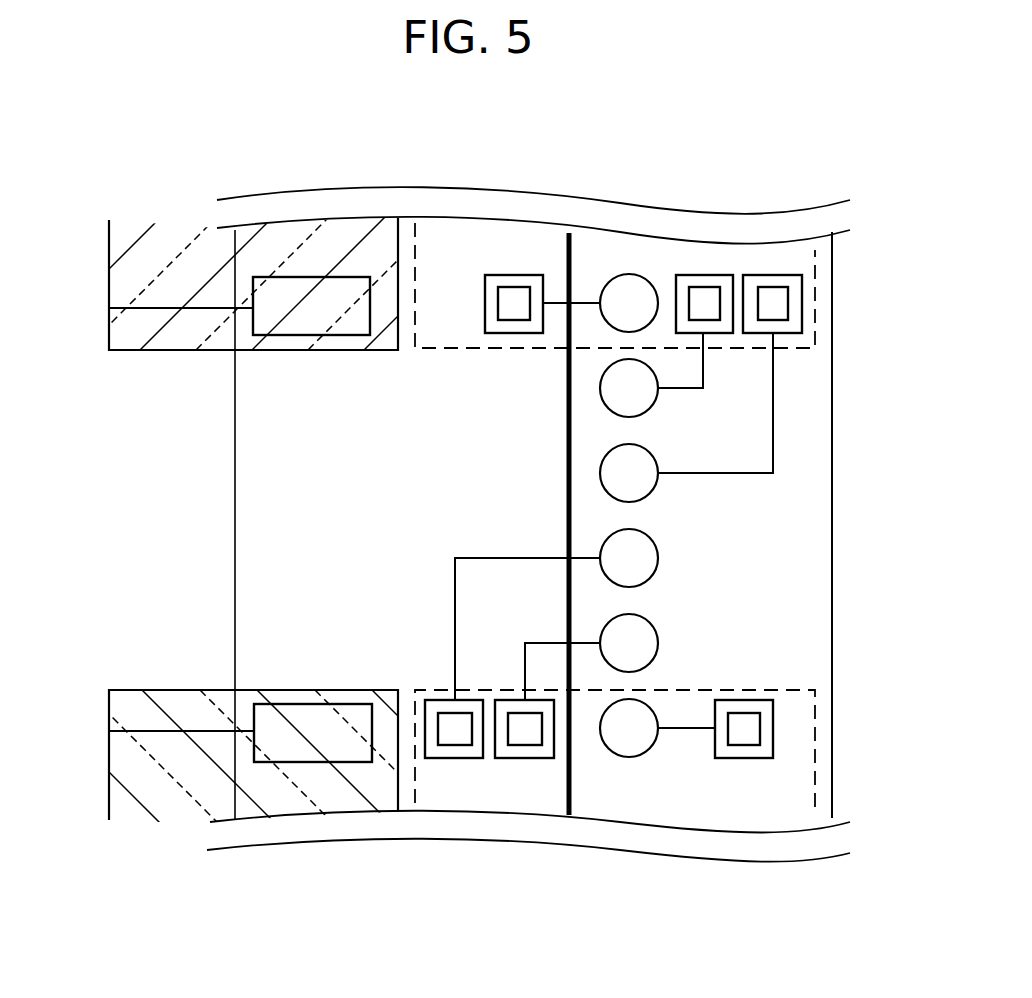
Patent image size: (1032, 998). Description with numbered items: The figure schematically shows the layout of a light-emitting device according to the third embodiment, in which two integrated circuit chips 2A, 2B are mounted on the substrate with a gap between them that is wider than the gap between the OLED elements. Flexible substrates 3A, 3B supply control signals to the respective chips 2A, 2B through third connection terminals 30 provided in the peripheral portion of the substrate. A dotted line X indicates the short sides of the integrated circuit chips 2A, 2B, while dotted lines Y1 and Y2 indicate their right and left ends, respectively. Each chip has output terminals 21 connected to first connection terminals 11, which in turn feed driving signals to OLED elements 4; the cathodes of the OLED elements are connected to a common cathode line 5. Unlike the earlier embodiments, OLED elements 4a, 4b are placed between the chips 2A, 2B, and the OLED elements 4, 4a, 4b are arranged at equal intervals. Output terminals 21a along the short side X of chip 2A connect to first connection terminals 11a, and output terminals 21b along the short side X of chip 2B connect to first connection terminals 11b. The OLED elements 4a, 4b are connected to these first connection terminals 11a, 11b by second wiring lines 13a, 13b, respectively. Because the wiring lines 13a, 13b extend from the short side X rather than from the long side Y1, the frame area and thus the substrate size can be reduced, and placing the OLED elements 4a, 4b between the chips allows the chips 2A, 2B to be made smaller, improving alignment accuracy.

The integrated circuit chip 2A is at (569, 194).
The integrated circuit chip 2B is at (596, 870).
The flexible substrate 3A is at (109, 290).
The flexible substrate 3B is at (109, 758).
The OLED element 4 is at (664, 491).
The OLED element 4a is at (655, 410).
The OLED element 4b is at (657, 573).
The common cathode line 5 is at (568, 458).
The first connection terminal 11 is at (510, 333).
The first connection terminal 11a is at (718, 333).
The first connection terminal 11b is at (512, 698).
The wiring line 13a is at (702, 391).
The wiring line 13b is at (548, 558).
The output terminal 21 is at (515, 287).
The output terminal 21a is at (706, 289).
The output terminal 21b is at (455, 745).
The third connection terminal 30 is at (300, 327).
The dotted line X is at (450, 350).
The dotted line Y1 is at (832, 292).
The dotted line Y2 is at (422, 280).